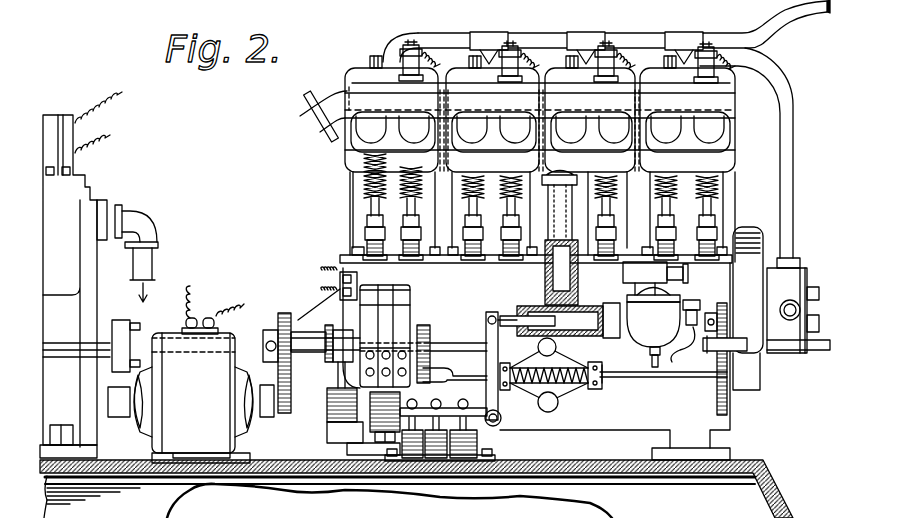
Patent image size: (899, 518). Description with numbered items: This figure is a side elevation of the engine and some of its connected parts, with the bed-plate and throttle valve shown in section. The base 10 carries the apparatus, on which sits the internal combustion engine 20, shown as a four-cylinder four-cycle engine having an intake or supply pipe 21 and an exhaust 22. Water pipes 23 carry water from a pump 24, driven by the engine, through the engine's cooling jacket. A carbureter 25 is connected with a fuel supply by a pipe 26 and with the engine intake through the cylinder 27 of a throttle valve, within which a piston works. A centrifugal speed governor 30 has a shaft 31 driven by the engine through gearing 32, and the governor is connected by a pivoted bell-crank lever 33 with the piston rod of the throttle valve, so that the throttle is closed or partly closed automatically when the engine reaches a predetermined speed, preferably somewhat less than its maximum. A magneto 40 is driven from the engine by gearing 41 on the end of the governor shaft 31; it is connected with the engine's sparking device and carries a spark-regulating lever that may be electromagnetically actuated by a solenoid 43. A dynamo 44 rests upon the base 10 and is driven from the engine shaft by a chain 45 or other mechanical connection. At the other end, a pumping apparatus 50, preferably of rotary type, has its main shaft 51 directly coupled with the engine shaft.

The base 10 is at (746, 502).
The internal combustion engine 20 is at (338, 84).
The intake pipe 21 is at (560, 228).
The exhaust 22 is at (305, 118).
The water pipes 23 is at (767, 20).
The pump 24 is at (790, 285).
The carbureter 25 is at (651, 335).
The pipe 26 is at (738, 350).
The cylinder of throttle valve 27 is at (580, 316).
The centrifugal speed governor 30 is at (573, 392).
The governor shaft 31 is at (642, 376).
The gearing 32 is at (728, 335).
The bell-crank lever 33 is at (497, 390).
The magneto 40 is at (417, 307).
The gearing 41 is at (430, 358).
The solenoid 43 is at (327, 398).
The dynamo 44 is at (167, 333).
The chain 45 is at (282, 333).
The pumping apparatus 50 is at (102, 192).
The main shaft 51 is at (140, 345).